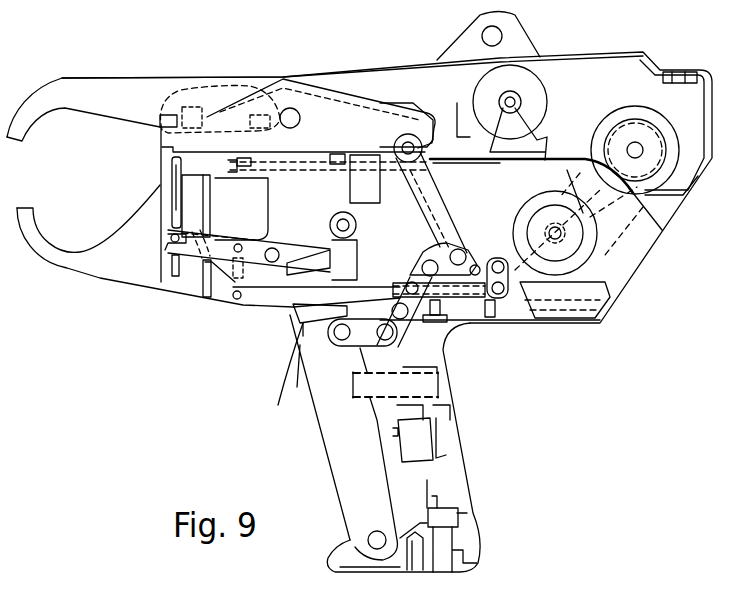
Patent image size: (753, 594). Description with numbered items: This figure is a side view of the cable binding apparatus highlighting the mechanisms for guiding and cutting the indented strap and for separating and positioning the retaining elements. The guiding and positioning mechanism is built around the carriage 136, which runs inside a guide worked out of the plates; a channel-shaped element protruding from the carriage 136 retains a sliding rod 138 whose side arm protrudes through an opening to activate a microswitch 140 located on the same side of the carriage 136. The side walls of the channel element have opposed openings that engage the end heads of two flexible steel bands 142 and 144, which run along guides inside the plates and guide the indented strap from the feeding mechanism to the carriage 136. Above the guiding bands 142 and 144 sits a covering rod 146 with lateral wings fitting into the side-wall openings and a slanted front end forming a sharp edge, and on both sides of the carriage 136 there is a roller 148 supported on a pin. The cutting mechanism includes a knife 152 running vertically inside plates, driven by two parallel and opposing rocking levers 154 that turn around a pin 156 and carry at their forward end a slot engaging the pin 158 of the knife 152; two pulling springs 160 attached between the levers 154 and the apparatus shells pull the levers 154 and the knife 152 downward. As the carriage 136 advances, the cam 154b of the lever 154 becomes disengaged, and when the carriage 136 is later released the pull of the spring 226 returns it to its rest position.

The carriage 136 is at (232, 283).
The sliding rod 138 is at (233, 170).
The microswitch 140 is at (363, 183).
The flexible steel band 142 is at (533, 193).
The flexible steel band 144 is at (540, 183).
The covering rod 146 is at (232, 147).
The roller 148 is at (343, 220).
The knife 152 is at (170, 200).
The rocking lever 154 is at (272, 262).
The cam 154b is at (297, 387).
The pin 156 is at (287, 265).
The pin 158 is at (167, 253).
The pulling spring 160 is at (280, 208).
The spring 226 is at (472, 263).